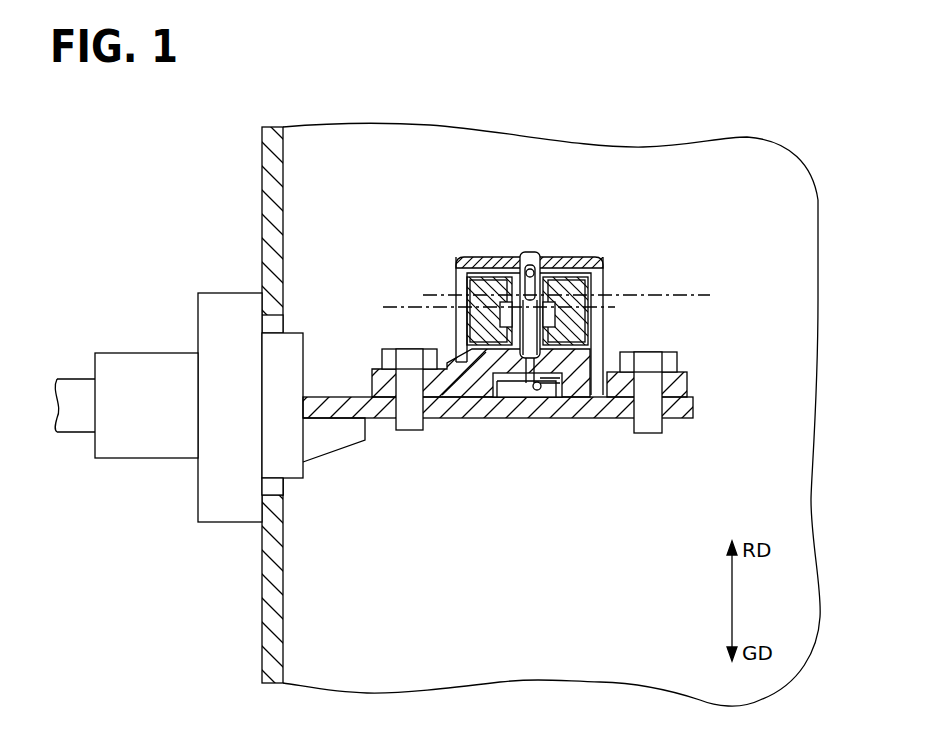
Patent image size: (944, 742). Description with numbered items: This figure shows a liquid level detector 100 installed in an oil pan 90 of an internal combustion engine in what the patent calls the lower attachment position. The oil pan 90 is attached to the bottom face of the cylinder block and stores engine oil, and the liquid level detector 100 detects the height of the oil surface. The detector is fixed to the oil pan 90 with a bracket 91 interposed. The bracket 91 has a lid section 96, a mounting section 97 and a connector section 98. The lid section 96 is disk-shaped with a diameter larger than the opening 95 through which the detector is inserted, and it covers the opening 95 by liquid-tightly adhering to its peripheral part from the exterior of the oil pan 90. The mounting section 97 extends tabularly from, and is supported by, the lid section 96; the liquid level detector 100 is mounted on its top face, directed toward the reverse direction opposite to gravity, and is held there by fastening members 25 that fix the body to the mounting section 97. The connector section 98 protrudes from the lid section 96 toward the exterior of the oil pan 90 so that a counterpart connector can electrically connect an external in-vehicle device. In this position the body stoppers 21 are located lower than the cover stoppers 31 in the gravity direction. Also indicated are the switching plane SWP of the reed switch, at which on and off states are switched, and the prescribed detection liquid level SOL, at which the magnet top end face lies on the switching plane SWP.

The oil pan 90 is at (262, 164).
The lid section 96 is at (223, 293).
The connector section 98 is at (157, 353).
The opening 95 is at (265, 485).
The bracket 91 is at (328, 452).
The mounting section 97 is at (470, 418).
The body stoppers 21 is at (583, 342).
The fastening members 25 is at (380, 356).
The liquid level detector 100 is at (594, 246).
The cover stoppers 31 is at (598, 285).
The switching plane SWP is at (400, 305).
The detection liquid level SOL is at (707, 294).